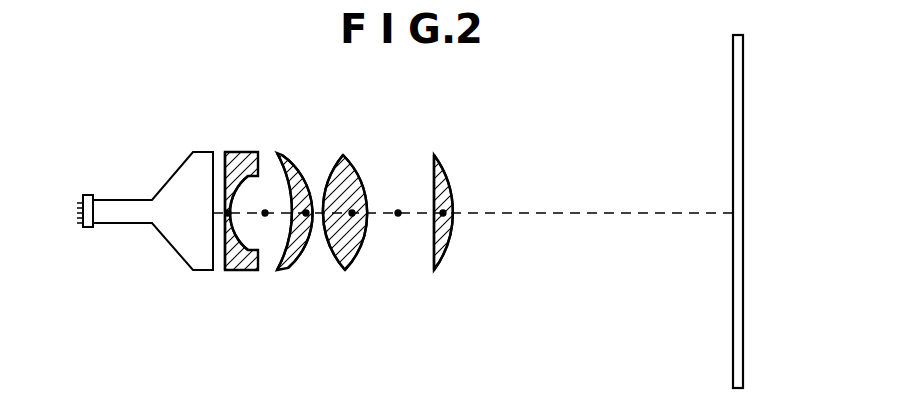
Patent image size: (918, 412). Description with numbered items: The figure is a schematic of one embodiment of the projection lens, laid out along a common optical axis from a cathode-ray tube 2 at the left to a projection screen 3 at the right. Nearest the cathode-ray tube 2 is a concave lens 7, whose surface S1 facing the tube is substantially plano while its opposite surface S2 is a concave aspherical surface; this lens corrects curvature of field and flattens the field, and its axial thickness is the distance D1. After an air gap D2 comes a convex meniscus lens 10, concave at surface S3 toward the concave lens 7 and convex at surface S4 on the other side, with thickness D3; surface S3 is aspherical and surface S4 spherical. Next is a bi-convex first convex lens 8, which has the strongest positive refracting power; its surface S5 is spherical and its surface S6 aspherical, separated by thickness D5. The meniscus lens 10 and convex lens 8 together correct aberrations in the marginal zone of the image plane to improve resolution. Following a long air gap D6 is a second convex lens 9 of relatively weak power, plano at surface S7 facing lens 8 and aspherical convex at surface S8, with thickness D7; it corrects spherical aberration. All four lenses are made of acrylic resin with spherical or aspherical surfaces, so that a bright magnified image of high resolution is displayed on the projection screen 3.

The cathode-ray tube 2 is at (204, 270).
The projection screen 3 is at (733, 325).
The concave lens 7 is at (338, 217).
The convex meniscus lens 10 is at (338, 217).
The first convex lens 8 is at (338, 217).
The second convex lens 9 is at (338, 227).
The surface S1 is at (222, 152).
The surface S2 is at (260, 175).
The surface S3 is at (271, 172).
The surface S4 is at (301, 176).
The surface S5 is at (338, 168).
The surface S6 is at (366, 174).
The surface S7 is at (432, 158).
The surface S8 is at (449, 172).
The axial distance D1 is at (228, 215).
The axial distance D2 is at (265, 215).
The axial distance D3 is at (306, 215).
The axial distance D5 is at (352, 215).
The axial distance D6 is at (398, 215).
The axial distance D7 is at (443, 215).